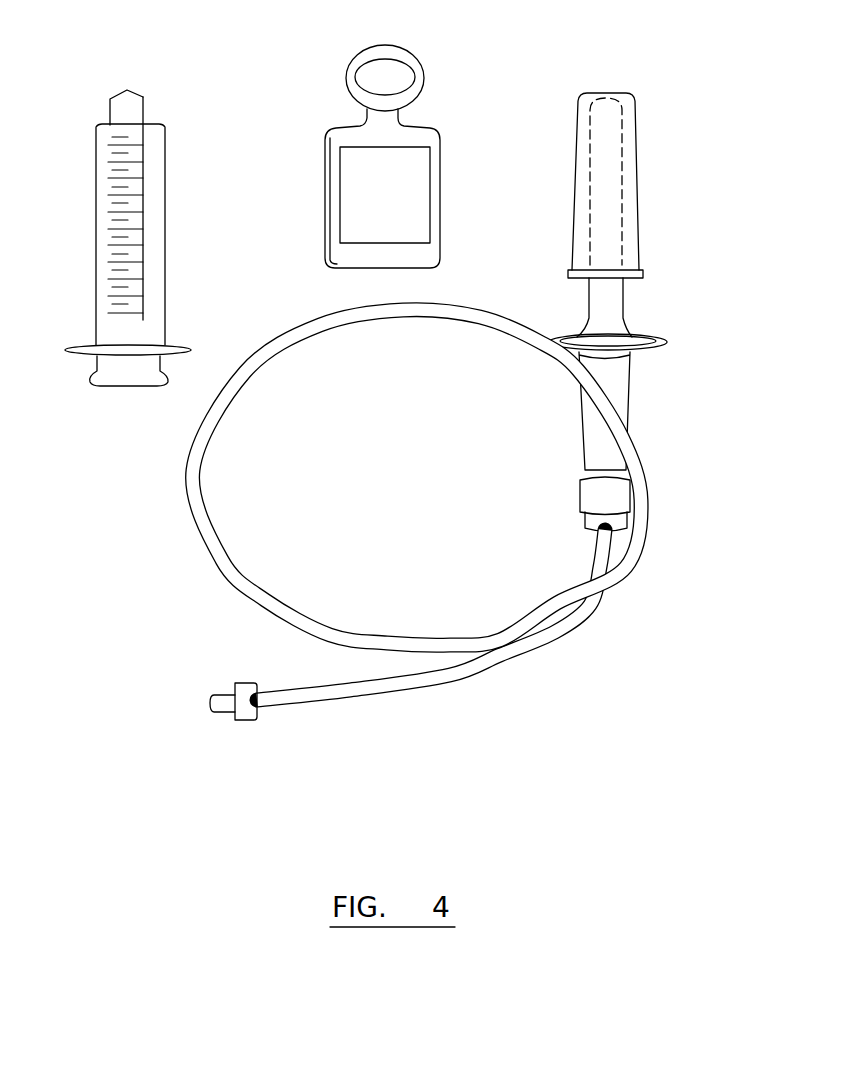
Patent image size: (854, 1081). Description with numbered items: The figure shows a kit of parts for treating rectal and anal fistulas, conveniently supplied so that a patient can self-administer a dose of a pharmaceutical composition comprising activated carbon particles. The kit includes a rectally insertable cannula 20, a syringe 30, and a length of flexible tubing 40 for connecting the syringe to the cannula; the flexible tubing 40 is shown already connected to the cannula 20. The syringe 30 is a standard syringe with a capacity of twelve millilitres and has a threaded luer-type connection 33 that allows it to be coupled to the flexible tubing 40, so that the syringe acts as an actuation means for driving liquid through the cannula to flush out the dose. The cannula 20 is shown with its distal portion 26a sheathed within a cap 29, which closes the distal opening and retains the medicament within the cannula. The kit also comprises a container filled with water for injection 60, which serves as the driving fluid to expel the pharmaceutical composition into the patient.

The rectally insertable cannula 20 is at (612, 318).
The distal portion of the cannula 26a is at (608, 178).
The cap 29 is at (635, 120).
The syringe 30 is at (178, 258).
The threaded luer-type connection 33 is at (132, 102).
The flexible tubing 40 is at (540, 650).
The container filled with water for injection 60 is at (415, 135).